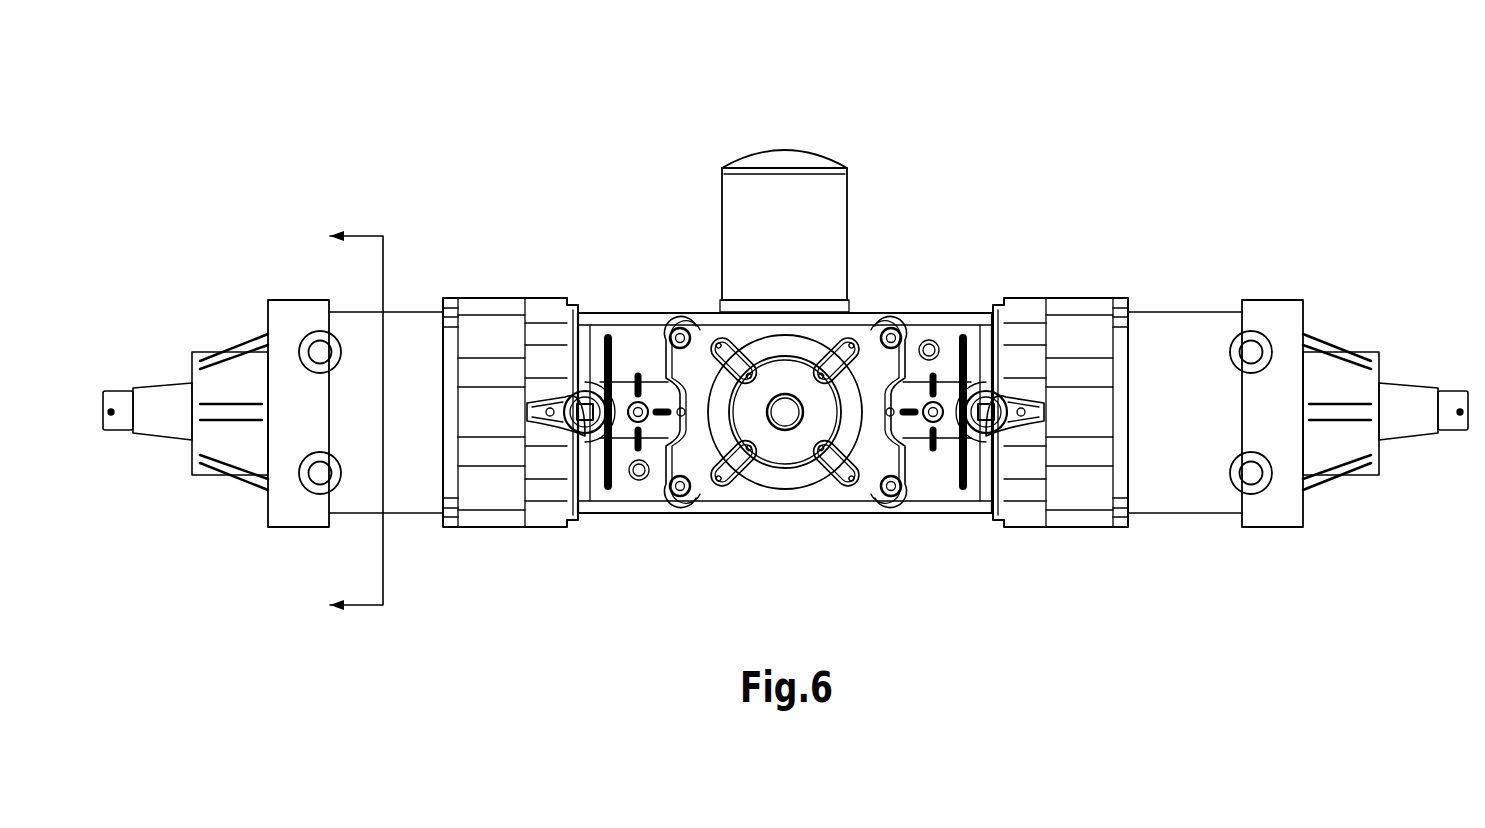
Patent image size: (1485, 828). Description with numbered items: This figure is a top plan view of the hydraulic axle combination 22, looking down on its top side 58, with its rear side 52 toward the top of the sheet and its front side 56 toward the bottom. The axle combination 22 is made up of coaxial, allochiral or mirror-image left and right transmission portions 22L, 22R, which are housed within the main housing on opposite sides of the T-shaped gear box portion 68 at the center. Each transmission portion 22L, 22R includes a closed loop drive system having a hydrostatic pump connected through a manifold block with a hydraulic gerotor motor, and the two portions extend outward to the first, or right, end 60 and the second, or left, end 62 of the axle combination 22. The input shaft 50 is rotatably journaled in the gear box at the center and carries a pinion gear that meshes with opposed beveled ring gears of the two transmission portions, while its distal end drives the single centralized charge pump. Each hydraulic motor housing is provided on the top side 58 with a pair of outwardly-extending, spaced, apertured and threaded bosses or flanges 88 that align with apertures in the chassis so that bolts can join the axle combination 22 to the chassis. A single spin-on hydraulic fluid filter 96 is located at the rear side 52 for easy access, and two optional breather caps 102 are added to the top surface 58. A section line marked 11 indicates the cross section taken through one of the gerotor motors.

The axle combination 22 is at (945, 118).
The right transmission portion 22R is at (487, 273).
The left transmission portion 22L is at (1110, 265).
The section line 11- 11 is at (343, 421).
The input shaft 50 is at (785, 412).
The rear side 52 is at (660, 312).
The front side 56 is at (745, 513).
The top side 58 is at (870, 330).
The first or right end 60 is at (268, 312).
The second or left end 62 is at (1306, 312).
The T-shaped gear box portion 68 is at (868, 490).
The apertured and threaded bosses or flanges 88 is at (317, 333).
The hydraulic fluid filter 96 is at (793, 195).
The breather caps 102 is at (640, 481).